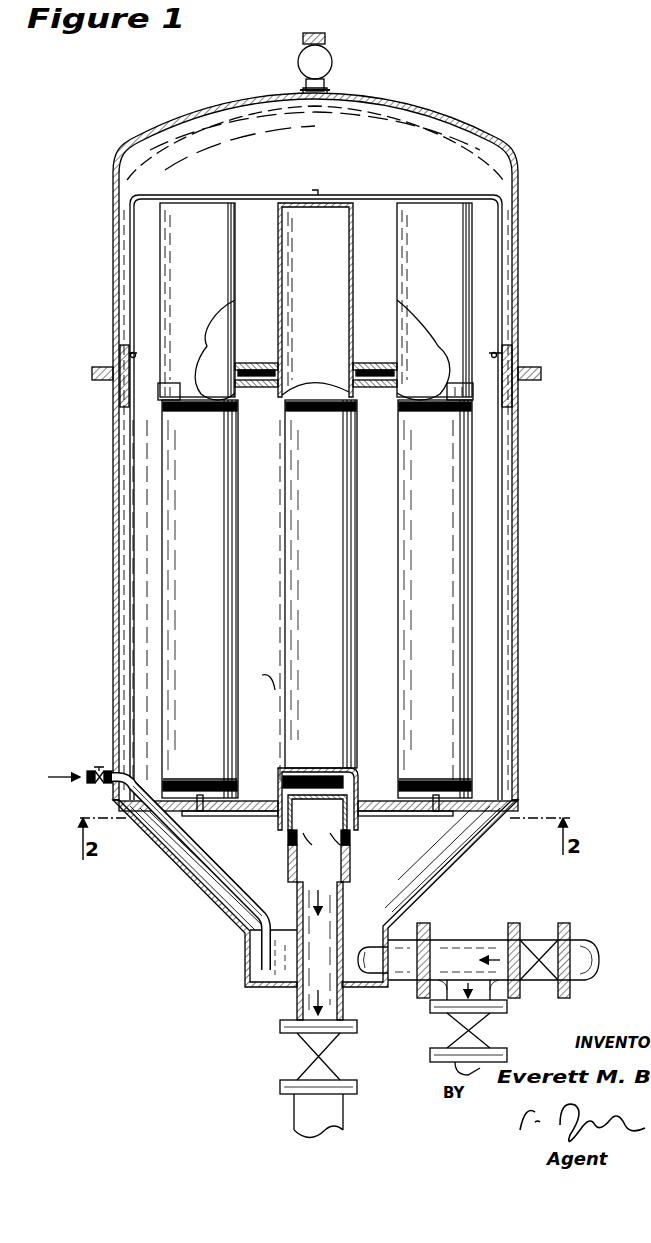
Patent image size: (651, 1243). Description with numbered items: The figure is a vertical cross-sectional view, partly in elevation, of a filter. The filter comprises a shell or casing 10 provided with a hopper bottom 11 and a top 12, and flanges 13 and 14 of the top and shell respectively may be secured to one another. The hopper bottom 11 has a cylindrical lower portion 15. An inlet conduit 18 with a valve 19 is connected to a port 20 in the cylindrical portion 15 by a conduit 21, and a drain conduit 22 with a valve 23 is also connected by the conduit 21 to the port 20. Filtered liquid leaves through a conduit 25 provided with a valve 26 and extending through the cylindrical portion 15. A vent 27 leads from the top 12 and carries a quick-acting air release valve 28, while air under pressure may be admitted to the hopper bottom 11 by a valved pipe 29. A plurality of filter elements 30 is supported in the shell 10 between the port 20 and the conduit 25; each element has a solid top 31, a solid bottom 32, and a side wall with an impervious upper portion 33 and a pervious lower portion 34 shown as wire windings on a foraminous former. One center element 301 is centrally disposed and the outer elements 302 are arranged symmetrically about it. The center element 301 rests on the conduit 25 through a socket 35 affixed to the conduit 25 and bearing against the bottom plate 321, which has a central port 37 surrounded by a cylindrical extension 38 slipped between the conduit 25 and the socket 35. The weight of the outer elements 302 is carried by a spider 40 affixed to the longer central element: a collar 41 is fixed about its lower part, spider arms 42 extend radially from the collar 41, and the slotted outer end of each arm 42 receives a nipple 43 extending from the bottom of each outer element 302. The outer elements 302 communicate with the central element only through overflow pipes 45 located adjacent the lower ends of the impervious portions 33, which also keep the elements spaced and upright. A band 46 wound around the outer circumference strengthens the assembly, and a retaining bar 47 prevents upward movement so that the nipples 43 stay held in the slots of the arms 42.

The shell 10 is at (520, 542).
The hopper bottom 11 is at (204, 893).
The top 12 is at (470, 121).
The flange 13 is at (536, 367).
The flange 14 is at (535, 382).
The cylindrical lower portion 15 is at (246, 961).
The inlet conduit 18 is at (508, 940).
The valve 19 is at (539, 945).
The port 20 is at (366, 978).
The conduit 21 is at (400, 940).
The drain conduit 22 is at (445, 996).
The valve 23 is at (462, 1028).
The conduit 25 is at (343, 906).
The valve 26 is at (303, 1048).
The vent 27 is at (325, 40).
The air release valve 28 is at (333, 62).
The valved pipe 29 is at (178, 858).
The filter element 30 is at (398, 522).
The center element 301 is at (358, 605).
The outer element 302 is at (238, 552).
The solid top 31 is at (214, 203).
The solid bottom 32 is at (474, 790).
The bottom plate 321 is at (286, 831).
The impervious upper portion 33 is at (397, 295).
The pervious lower portion 34 is at (240, 645).
The socket 35 is at (350, 865).
The central port 37 is at (350, 843).
The cylindrical extension 38 is at (290, 848).
The spider 40 is at (458, 819).
The collar 41 is at (276, 819).
The spider arm 42 is at (386, 814).
The nipple 43 is at (442, 816).
The overflow pipe 45 is at (270, 363).
The band 46 is at (473, 396).
The retaining bar 47 is at (505, 207).